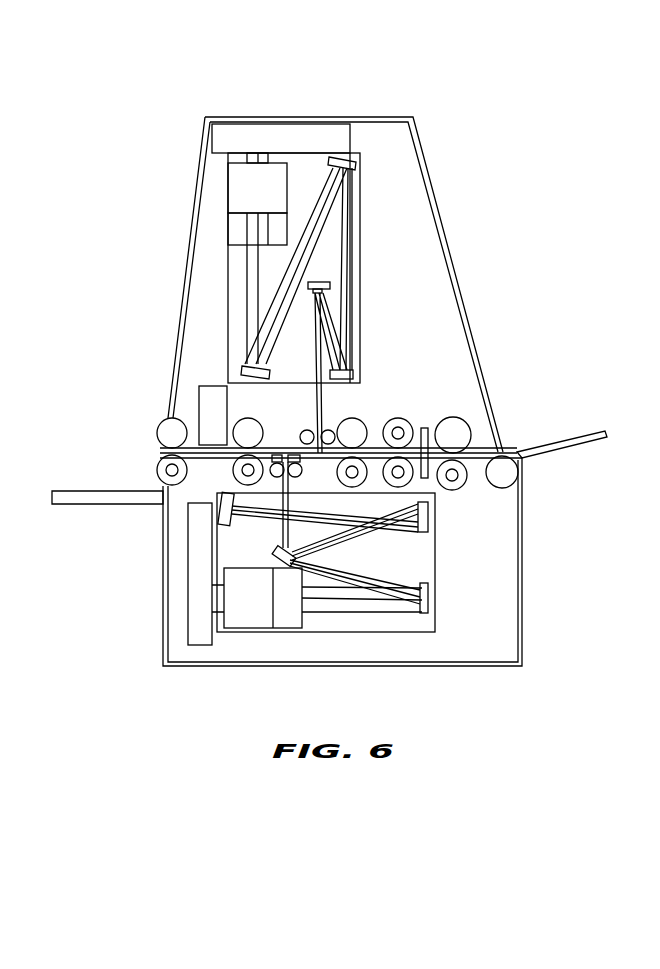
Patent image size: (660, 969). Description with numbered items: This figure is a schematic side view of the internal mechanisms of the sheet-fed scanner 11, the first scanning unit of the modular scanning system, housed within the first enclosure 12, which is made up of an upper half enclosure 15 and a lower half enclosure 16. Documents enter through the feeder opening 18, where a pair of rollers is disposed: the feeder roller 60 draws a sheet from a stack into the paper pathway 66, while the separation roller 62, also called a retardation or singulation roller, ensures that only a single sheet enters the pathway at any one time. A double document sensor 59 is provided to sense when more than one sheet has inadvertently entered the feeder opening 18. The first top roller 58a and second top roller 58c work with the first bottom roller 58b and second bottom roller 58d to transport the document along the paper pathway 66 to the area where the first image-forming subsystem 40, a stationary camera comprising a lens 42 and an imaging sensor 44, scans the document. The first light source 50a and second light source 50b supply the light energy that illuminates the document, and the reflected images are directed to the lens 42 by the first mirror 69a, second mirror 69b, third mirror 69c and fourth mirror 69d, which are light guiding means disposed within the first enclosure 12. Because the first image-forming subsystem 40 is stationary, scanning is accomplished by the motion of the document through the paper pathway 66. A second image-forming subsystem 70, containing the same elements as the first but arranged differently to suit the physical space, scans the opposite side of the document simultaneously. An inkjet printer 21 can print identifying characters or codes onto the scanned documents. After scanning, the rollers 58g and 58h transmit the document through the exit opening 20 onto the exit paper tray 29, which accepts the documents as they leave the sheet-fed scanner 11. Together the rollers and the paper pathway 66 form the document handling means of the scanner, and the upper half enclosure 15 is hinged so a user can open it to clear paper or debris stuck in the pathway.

The sheet-fed scanner 11 is at (228, 92).
The first enclosure 12 is at (163, 662).
The upper half enclosure 15 is at (453, 256).
The lower half enclosure 16 is at (521, 662).
The feeder opening 18 is at (502, 447).
The exit opening 20 is at (158, 452).
The inkjet printer 21 is at (213, 385).
The exit paper tray 29 is at (112, 505).
The first image-forming subsystem 40 is at (362, 216).
The lens 42 is at (228, 198).
The imaging sensor 44 is at (247, 160).
The first light source 50a is at (308, 429).
The second light source 50b is at (335, 430).
The first top roller 58a is at (415, 423).
The first bottom roller 58b is at (400, 490).
The second top roller 58c is at (362, 419).
The second bottom roller 58d is at (355, 489).
The roller 58g is at (160, 422).
The roller 58h is at (157, 471).
The double document sensor 59 is at (450, 413).
The feeder roller 60 is at (458, 491).
The separation roller 62 is at (468, 405).
The paper pathway 66 is at (195, 438).
The first mirror 69a is at (330, 283).
The second mirror 69b is at (352, 370).
The third mirror 69c is at (348, 157).
The fourth mirror 69d is at (238, 366).
The second image-forming subsystem 70 is at (318, 630).